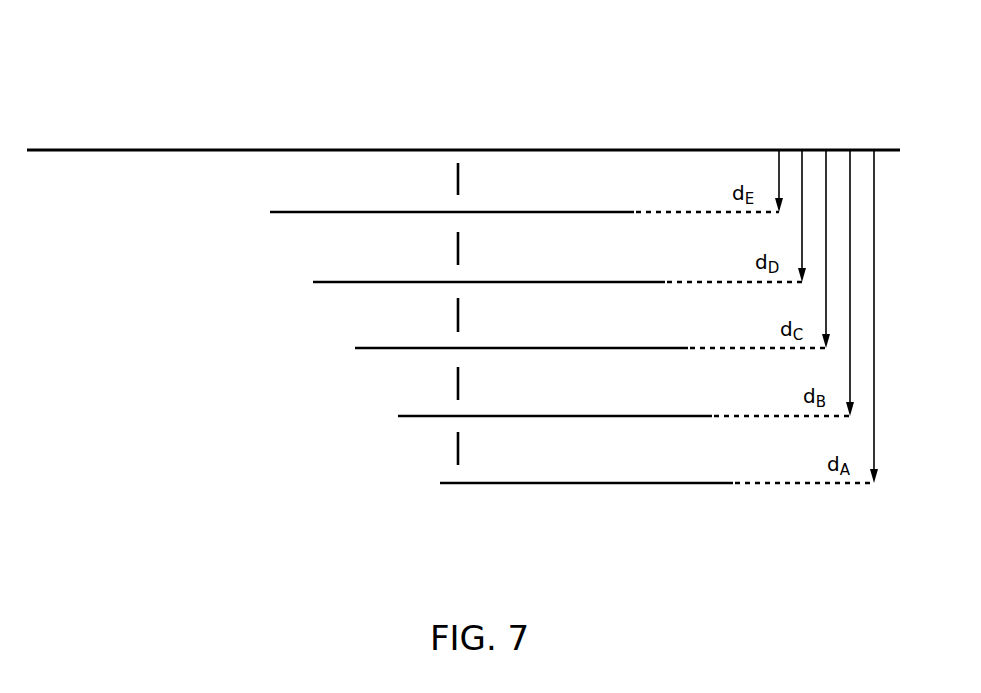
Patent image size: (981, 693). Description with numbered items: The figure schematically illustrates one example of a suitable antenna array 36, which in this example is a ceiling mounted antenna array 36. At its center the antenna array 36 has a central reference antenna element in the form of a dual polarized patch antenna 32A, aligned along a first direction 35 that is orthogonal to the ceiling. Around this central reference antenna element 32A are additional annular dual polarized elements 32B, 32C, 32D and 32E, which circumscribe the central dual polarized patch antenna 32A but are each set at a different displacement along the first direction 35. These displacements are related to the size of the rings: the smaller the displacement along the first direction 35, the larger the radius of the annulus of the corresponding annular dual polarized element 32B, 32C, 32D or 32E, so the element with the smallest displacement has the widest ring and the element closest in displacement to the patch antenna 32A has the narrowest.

The antenna array 36 is at (840, 79).
The first direction 35 is at (472, 180).
The annular dual polarized element 32E is at (290, 212).
The annular dual polarized element 32D is at (325, 281).
The annular dual polarized element 32C is at (370, 347).
The annular dual polarized element 32B is at (412, 415).
The dual polarized patch antenna 32A is at (450, 482).